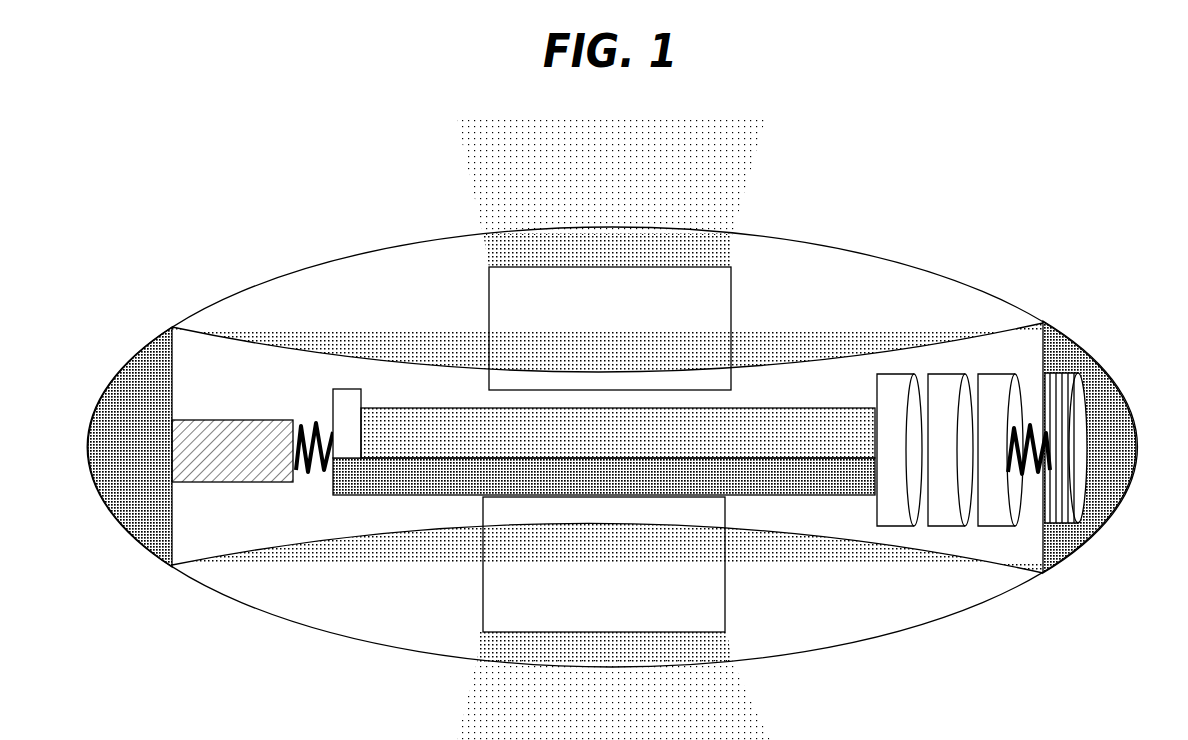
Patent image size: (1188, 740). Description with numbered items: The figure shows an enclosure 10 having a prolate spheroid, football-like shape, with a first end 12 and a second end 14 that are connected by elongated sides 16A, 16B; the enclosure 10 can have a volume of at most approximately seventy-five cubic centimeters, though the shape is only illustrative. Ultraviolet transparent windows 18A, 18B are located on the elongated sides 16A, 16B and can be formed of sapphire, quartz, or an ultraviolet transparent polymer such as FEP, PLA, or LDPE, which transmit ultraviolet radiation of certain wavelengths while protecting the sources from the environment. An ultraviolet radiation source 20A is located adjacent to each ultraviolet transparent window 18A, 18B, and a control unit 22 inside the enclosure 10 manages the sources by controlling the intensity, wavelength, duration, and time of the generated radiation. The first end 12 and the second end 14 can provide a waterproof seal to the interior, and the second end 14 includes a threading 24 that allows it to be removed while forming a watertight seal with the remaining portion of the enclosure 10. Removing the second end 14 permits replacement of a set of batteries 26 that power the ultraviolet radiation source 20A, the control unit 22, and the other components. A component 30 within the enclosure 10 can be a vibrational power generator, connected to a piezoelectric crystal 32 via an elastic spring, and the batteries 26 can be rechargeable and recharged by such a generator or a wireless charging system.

The enclosure 10 is at (122, 201).
The first end 12 is at (130, 362).
The second end 14 is at (1103, 365).
The elongated side 16A is at (372, 252).
The elongated side 16B is at (830, 648).
The ultraviolet transparent window 18A is at (507, 227).
The ultraviolet transparent window 18B is at (693, 668).
The ultraviolet radiation source 20A is at (617, 331).
The control unit 22 is at (598, 444).
The threading 24 is at (1060, 375).
The batteries 26 is at (987, 385).
The component 30 is at (213, 461).
The piezoelectric crystal 32 is at (593, 492).